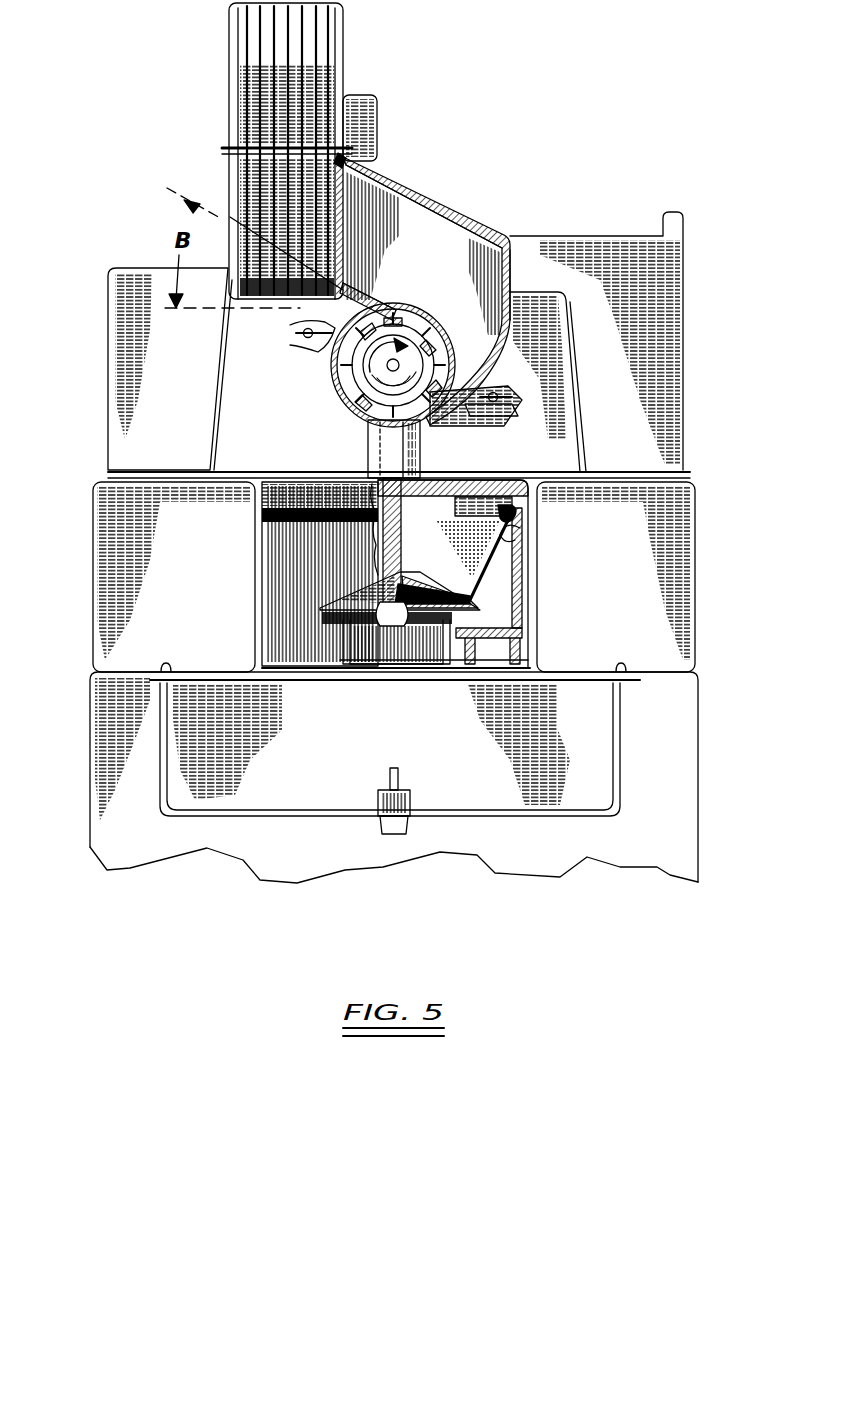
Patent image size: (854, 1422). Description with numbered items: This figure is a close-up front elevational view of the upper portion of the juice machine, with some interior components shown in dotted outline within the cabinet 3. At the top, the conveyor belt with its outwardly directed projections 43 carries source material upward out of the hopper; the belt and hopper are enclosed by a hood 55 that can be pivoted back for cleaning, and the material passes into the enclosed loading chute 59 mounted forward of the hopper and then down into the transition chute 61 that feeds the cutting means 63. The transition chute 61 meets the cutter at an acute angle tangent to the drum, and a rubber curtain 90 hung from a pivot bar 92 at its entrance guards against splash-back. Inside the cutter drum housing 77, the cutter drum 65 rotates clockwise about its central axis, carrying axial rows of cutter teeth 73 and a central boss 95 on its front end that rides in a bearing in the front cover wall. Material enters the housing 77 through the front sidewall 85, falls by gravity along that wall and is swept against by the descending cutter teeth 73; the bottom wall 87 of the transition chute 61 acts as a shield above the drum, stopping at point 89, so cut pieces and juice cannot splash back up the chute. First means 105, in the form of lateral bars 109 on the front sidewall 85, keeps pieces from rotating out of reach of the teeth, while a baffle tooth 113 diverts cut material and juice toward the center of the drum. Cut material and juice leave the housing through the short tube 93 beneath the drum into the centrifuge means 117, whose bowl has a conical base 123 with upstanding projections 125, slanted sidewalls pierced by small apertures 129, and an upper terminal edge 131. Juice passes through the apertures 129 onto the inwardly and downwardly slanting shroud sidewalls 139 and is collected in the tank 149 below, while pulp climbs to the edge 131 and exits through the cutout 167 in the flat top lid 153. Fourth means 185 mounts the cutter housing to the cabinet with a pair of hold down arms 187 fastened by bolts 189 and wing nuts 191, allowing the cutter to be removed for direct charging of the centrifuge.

The cabinet 3 is at (700, 749).
The outwardly directed projections 43 is at (322, 66).
The hood 55 is at (108, 312).
The loading chute 59 is at (230, 42).
The transition chute 61 is at (428, 223).
The cutting means 63 is at (545, 294).
The cutter drum 65 is at (349, 365).
The cutter teeth 73 is at (448, 341).
The cutter drum housing 77 is at (468, 222).
The front sidewall 85 is at (520, 350).
The bottom wall 87 is at (368, 300).
The point 89 is at (392, 320).
The curtain 90 is at (368, 182).
The pivot bar 92 is at (350, 158).
The short tube 93 is at (368, 456).
The central boss 95 is at (352, 406).
The first means 105 is at (500, 381).
The lateral bars 109 is at (462, 426).
The baffle tooth 113 is at (346, 386).
The centrifuge means 117 is at (540, 575).
The conical base 123 is at (395, 578).
The upstanding projections 125 is at (413, 664).
The small apertures 129 is at (530, 620).
The upper terminal edge 131 is at (488, 482).
The shroud sidewalls 139 is at (526, 520).
The tank 149 is at (300, 802).
The top lid 153 is at (288, 500).
The cutout 167 is at (500, 582).
The fourth means 185 is at (520, 418).
The hold down arms 187 is at (512, 398).
The bolts 189 is at (300, 330).
The wing nuts 191 is at (300, 338).